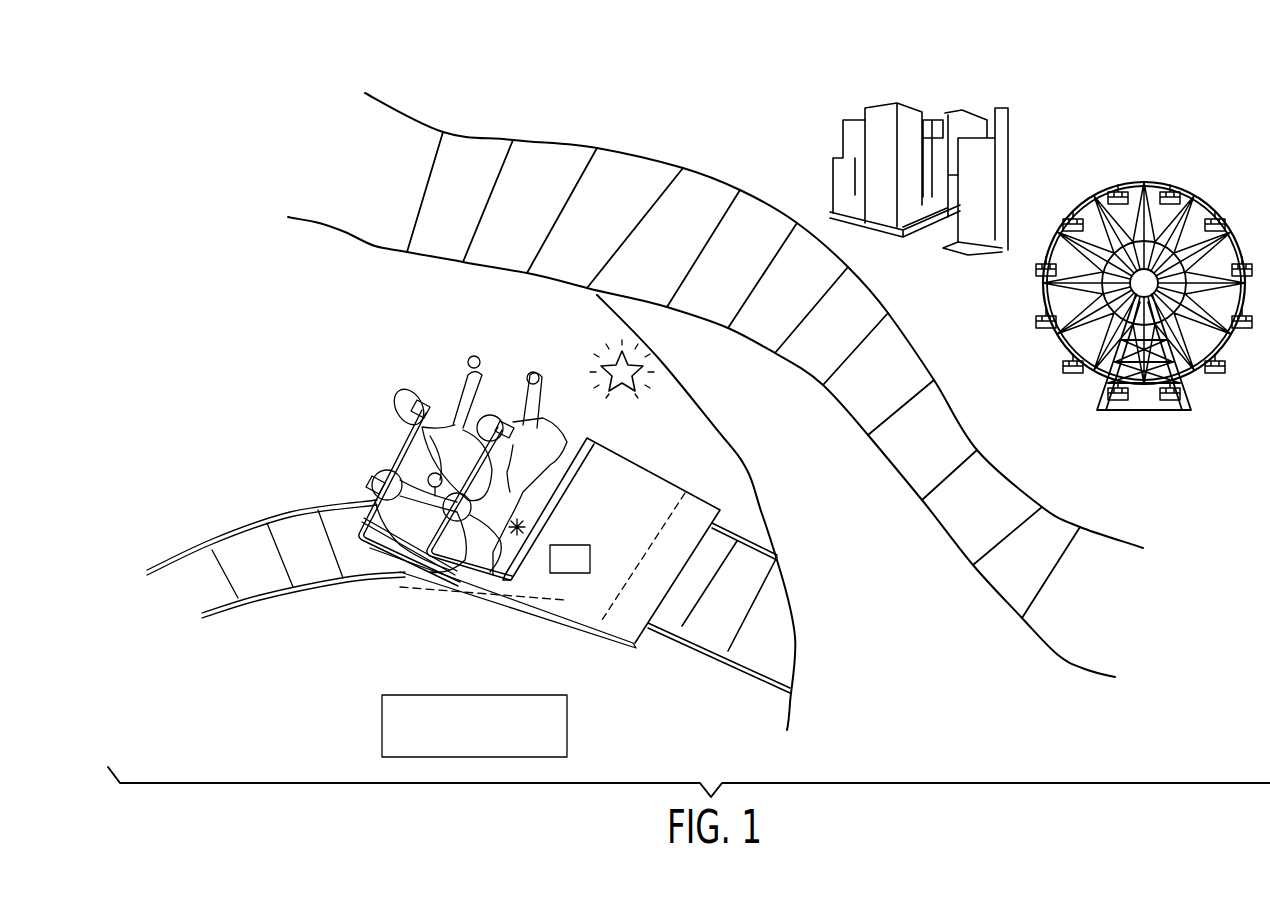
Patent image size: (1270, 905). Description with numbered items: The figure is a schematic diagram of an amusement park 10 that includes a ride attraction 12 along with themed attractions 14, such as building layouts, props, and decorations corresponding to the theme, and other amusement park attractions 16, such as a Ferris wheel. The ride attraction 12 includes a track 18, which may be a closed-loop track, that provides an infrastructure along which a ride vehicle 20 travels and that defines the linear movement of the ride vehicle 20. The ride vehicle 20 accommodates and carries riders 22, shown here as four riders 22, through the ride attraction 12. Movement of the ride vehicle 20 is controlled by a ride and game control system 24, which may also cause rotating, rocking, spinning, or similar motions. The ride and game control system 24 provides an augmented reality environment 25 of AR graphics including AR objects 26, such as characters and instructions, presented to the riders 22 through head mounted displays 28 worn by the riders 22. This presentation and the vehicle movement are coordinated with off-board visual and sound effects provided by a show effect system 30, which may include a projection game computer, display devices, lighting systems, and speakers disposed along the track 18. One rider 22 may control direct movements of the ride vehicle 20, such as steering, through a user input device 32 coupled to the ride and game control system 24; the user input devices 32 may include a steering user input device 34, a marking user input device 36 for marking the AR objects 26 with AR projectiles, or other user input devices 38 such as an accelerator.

The amusement park 10 is at (466, 70).
The ride attraction 12 is at (235, 346).
The themed attractions 14 is at (880, 108).
The other amusement park attractions 16 is at (1168, 122).
The track 18 is at (522, 140).
The ride vehicle 20 is at (640, 480).
The riders 22 is at (398, 392).
The ride and game control system 24 is at (572, 574).
The augmented reality environment 25 is at (362, 305).
The AR objects 26 is at (624, 392).
The head mounted displays 28 is at (423, 400).
The show effect system 30 is at (477, 694).
The user input device 32 is at (434, 530).
The steering user input device 34 is at (526, 527).
The marking user input device 36 is at (410, 440).
The other user input devices 38 is at (495, 592).